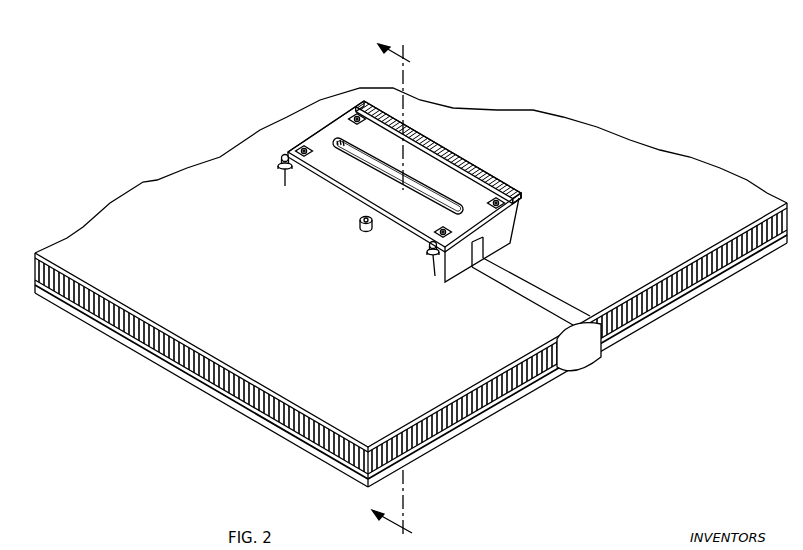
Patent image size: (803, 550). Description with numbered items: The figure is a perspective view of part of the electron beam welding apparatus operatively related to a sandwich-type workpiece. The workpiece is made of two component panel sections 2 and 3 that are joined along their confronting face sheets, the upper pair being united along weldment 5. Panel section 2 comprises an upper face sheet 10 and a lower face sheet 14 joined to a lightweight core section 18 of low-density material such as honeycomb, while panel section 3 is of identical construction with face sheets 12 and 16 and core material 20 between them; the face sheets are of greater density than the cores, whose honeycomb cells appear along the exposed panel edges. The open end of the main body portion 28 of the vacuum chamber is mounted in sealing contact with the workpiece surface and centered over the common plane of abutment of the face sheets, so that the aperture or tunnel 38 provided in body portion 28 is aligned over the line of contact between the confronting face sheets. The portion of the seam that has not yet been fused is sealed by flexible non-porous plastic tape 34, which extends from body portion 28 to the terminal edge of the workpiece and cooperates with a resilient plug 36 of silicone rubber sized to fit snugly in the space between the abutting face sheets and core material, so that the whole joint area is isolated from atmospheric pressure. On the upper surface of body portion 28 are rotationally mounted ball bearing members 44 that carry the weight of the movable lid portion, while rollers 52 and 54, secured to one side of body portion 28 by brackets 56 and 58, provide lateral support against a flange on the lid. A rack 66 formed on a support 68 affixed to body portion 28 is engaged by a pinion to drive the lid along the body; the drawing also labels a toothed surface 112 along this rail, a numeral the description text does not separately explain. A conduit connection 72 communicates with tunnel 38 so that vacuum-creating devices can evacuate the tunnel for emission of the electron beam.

The workpiece component panel section 2 is at (157, 195).
The workpiece component panel section 3 is at (371, 44).
The weldment 5 is at (292, 149).
The upper face sheet 10 is at (302, 408).
The face sheet 12 is at (684, 263).
The lower face sheet 14 is at (277, 427).
The face sheet 16 is at (757, 252).
The core section 18 is at (207, 373).
The core material 20 is at (673, 290).
The main body portion 28 is at (347, 210).
The plastic tape 34 is at (527, 290).
The resilient plug 36 is at (590, 360).
The aperture or tunnel 38 is at (377, 165).
The ball bearing members 44 is at (355, 115).
The roller 52 is at (430, 254).
The roller 54 is at (280, 163).
The bracket 56 is at (437, 258).
The bracket 58 is at (286, 172).
The rack 66 is at (510, 188).
The support 68 is at (522, 199).
The conduit connection 72 is at (364, 229).
The knurled surface 112 is at (453, 187).